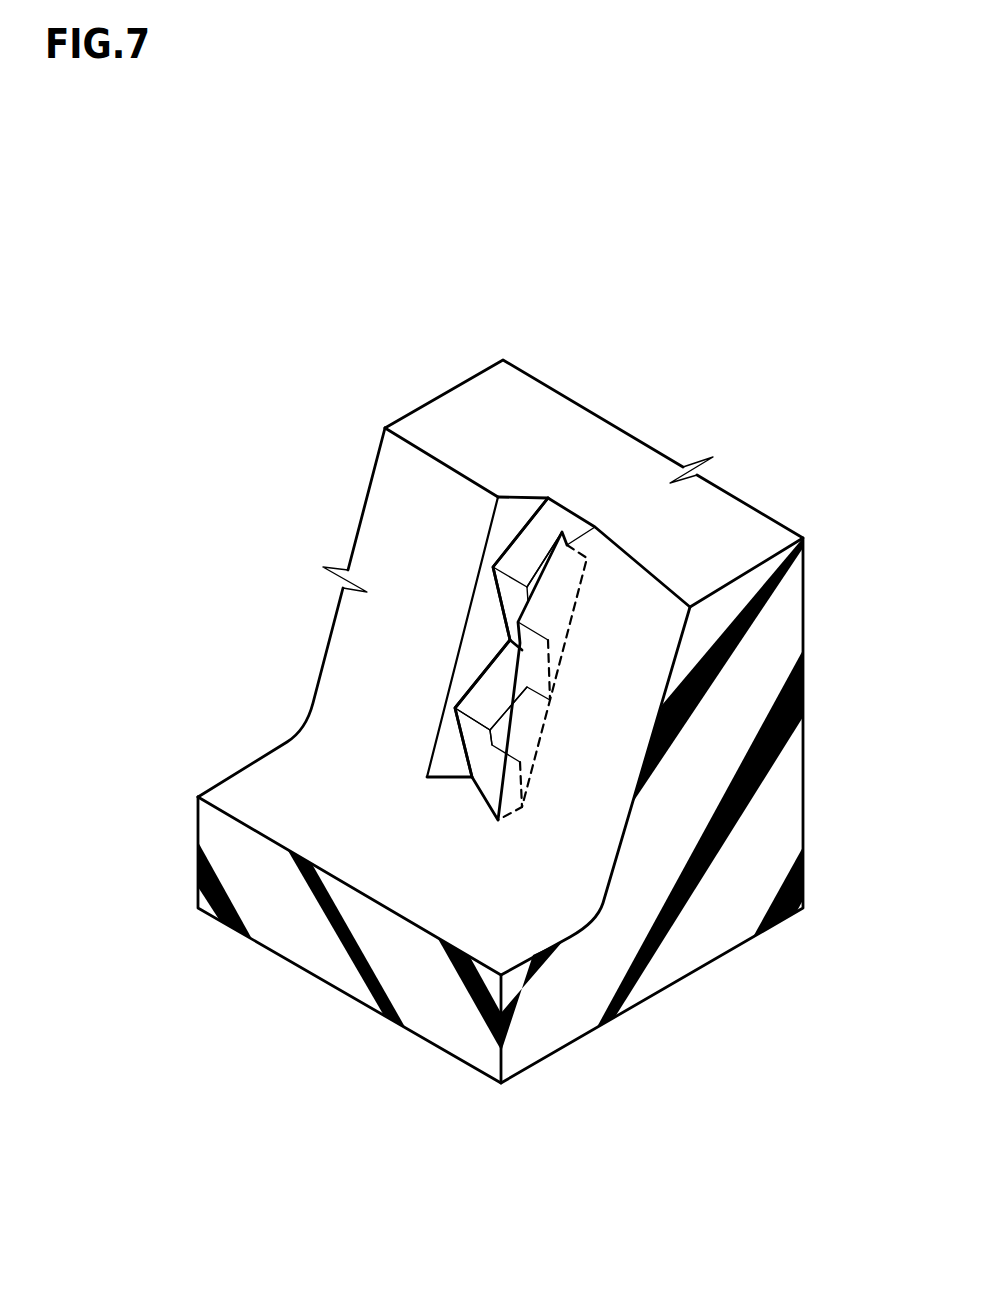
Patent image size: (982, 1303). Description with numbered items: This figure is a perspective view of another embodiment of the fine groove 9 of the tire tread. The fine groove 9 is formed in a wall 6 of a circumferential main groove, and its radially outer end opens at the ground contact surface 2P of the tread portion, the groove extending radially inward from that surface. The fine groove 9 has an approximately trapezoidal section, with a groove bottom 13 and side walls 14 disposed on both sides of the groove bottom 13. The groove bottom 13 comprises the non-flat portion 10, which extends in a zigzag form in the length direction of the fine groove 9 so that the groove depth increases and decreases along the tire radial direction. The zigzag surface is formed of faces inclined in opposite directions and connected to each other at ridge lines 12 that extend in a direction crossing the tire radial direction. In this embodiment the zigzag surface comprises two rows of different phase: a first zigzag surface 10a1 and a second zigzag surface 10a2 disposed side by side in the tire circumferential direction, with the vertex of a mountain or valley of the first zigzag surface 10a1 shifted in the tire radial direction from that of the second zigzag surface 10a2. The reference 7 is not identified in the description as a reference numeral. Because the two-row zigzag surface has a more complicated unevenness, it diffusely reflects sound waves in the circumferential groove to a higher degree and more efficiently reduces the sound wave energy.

The ground contact surface 2P is at (510, 393).
The side wall 14 is at (497, 537).
The wall 6 is at (620, 702).
The step top surface 7 is at (523, 915).
The non-flat portion 10 is at (473, 746).
The first zigzag surface 10a1 is at (487, 695).
The second zigzag surface 10a2 is at (537, 657).
The ridge line 12 is at (517, 578).
The fine groove 9 is at (482, 588).
The groove bottom 13 is at (488, 628).